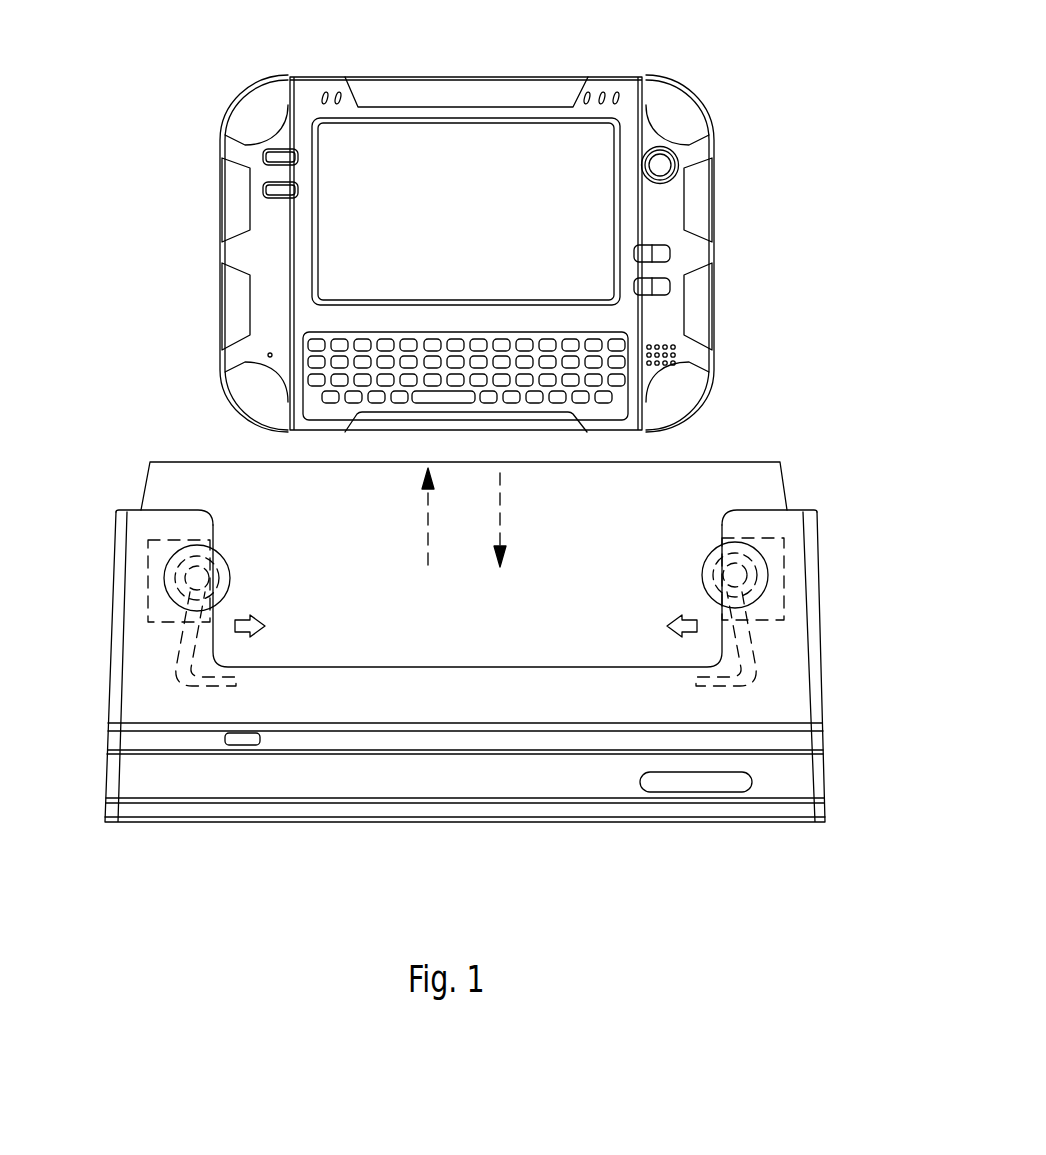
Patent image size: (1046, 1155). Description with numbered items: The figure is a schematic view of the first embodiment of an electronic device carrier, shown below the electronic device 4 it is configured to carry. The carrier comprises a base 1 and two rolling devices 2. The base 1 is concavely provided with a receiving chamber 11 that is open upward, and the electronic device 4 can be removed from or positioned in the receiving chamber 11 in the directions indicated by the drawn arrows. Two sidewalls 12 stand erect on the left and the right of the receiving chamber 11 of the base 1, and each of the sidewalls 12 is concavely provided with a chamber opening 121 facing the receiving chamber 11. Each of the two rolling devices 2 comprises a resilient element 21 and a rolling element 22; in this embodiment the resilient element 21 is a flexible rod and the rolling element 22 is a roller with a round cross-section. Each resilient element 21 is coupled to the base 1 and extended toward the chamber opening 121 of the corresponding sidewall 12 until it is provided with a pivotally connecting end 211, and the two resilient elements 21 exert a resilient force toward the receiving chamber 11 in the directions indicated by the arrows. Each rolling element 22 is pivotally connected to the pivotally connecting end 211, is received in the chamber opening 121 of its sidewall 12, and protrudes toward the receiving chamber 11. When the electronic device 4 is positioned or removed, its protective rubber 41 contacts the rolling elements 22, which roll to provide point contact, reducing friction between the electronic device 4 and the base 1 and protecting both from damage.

The base 1 is at (136, 457).
The receiving chamber 11 is at (483, 642).
The sidewall 12 is at (145, 522).
The chamber opening 121 is at (147, 615).
The rolling device 2 is at (130, 579).
The resilient element 21 is at (180, 648).
The pivotally connecting end 211 is at (195, 573).
The rolling element 22 is at (700, 573).
The electronic device 4 is at (706, 92).
The protective rubber 41 is at (237, 97).